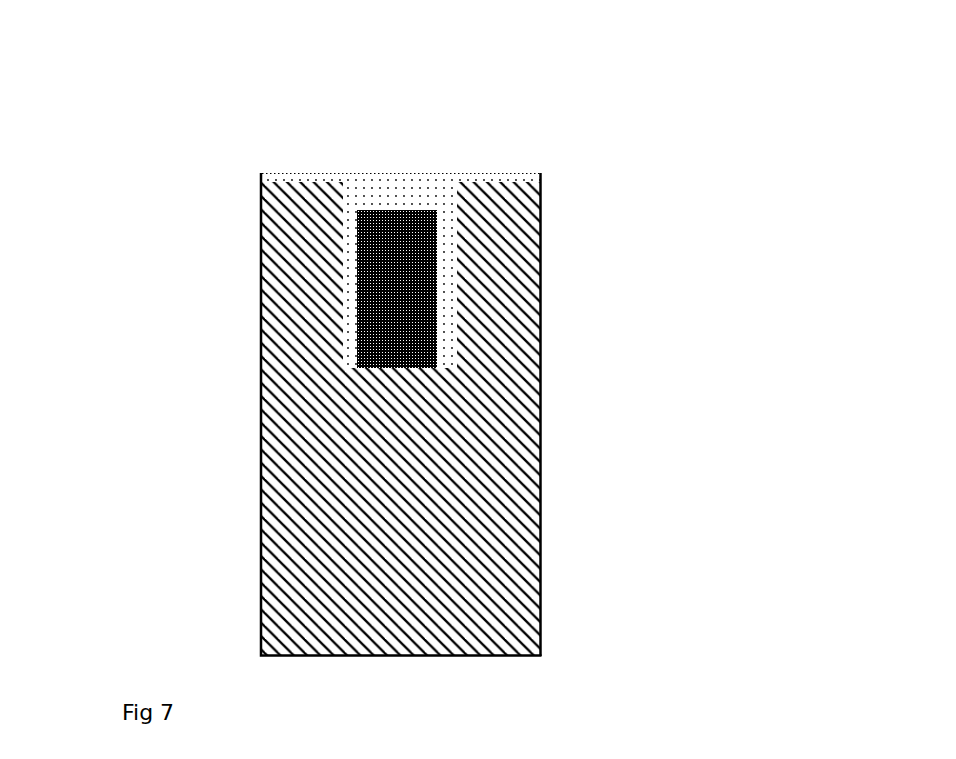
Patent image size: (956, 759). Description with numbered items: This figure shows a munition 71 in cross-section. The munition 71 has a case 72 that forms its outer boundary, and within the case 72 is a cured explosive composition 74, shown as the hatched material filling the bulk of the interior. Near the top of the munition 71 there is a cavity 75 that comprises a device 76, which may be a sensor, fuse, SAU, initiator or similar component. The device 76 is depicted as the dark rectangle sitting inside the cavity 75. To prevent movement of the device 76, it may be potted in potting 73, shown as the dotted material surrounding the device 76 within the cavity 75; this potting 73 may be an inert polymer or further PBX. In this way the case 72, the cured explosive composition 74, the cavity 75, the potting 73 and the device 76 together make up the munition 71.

The munition 71 is at (248, 397).
The case 72 is at (540, 410).
The potting 73 is at (390, 190).
The cured explosive composition 74 is at (500, 487).
The cavity 75 is at (340, 205).
The device 76 is at (413, 242).